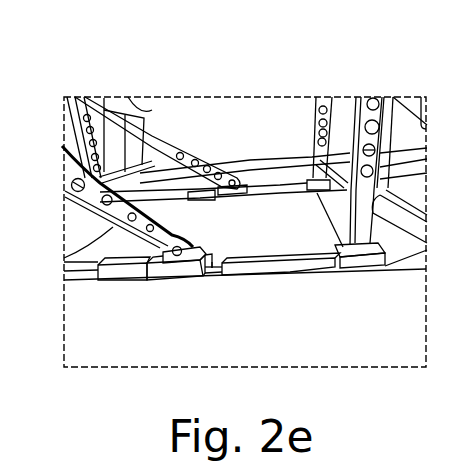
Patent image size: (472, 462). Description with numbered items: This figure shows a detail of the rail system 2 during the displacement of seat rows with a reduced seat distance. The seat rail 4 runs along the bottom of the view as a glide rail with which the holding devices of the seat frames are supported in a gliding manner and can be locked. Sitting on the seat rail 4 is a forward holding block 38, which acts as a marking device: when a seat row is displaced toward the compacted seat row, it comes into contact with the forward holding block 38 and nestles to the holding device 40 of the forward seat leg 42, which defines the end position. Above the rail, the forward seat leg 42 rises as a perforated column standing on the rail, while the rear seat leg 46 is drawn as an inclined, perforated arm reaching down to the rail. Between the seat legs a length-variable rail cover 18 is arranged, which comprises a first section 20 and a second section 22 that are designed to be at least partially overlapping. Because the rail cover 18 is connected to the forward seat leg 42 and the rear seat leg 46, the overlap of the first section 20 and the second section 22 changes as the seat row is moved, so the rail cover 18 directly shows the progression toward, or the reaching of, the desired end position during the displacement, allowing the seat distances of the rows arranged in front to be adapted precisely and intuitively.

The rail system 2 is at (131, 82).
The seat rail 4 is at (82, 277).
The rail cover 18 is at (285, 300).
The first section 20 is at (267, 268).
The second section 22 is at (217, 278).
The forward holding block 38 is at (125, 283).
The holding device 40 is at (180, 279).
The forward seat leg 42 is at (368, 104).
The rear seat leg 46 is at (226, 166).